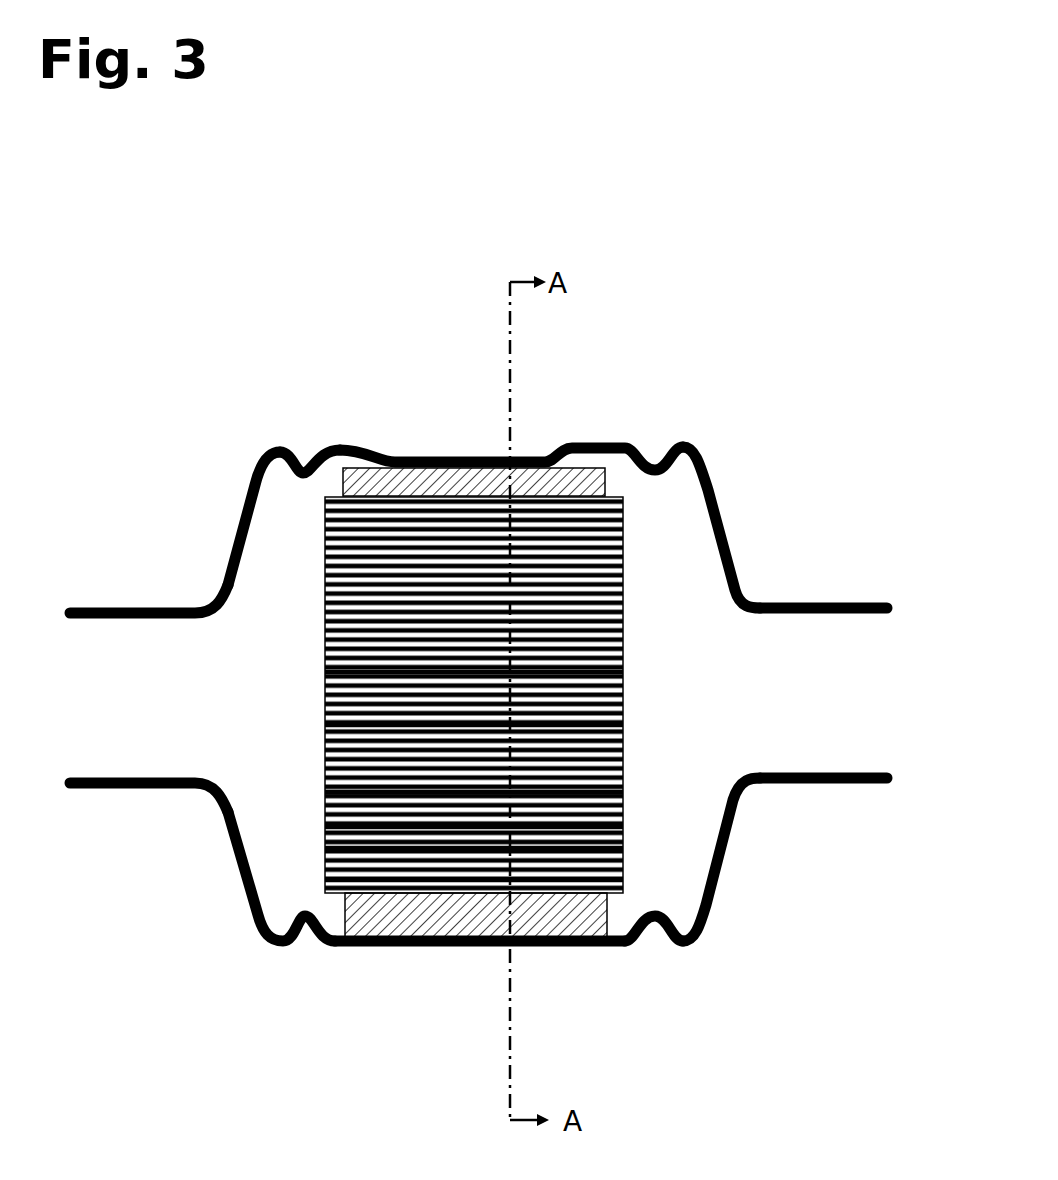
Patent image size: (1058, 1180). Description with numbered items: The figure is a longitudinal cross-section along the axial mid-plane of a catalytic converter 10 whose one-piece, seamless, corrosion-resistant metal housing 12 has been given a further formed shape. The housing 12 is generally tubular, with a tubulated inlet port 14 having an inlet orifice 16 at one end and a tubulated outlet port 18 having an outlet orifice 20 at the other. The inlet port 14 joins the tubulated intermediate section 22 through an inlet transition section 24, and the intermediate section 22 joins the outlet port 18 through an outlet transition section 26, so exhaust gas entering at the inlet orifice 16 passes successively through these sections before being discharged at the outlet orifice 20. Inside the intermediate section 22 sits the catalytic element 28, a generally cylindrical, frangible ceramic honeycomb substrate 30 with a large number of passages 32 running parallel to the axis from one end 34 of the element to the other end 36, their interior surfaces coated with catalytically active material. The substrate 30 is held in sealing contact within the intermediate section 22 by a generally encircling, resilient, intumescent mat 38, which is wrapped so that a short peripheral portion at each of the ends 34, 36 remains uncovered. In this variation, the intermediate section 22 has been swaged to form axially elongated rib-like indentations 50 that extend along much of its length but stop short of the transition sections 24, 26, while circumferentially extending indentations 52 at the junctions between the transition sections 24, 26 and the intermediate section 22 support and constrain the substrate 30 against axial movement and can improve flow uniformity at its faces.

The catalytic converter 10 is at (238, 329).
The housing 12 is at (396, 414).
The inlet port 14 is at (159, 598).
The inlet orifice 16 is at (78, 692).
The outlet port 18 is at (830, 607).
The outlet orifice 20 is at (878, 696).
The intermediate section 22 is at (457, 945).
The inlet transition section 24 is at (226, 530).
The outlet transition section 26 is at (716, 521).
The catalytic element 28 is at (316, 886).
The ceramic honeycomb substrate 30 is at (325, 748).
The passages 32 is at (325, 792).
The one end of catalytic element 34 is at (325, 672).
The other end of catalytic element 36 is at (623, 725).
The mat 38 is at (628, 462).
The rib-like indentations 50 is at (468, 462).
The circumferentially extending indentations 52 is at (302, 466).